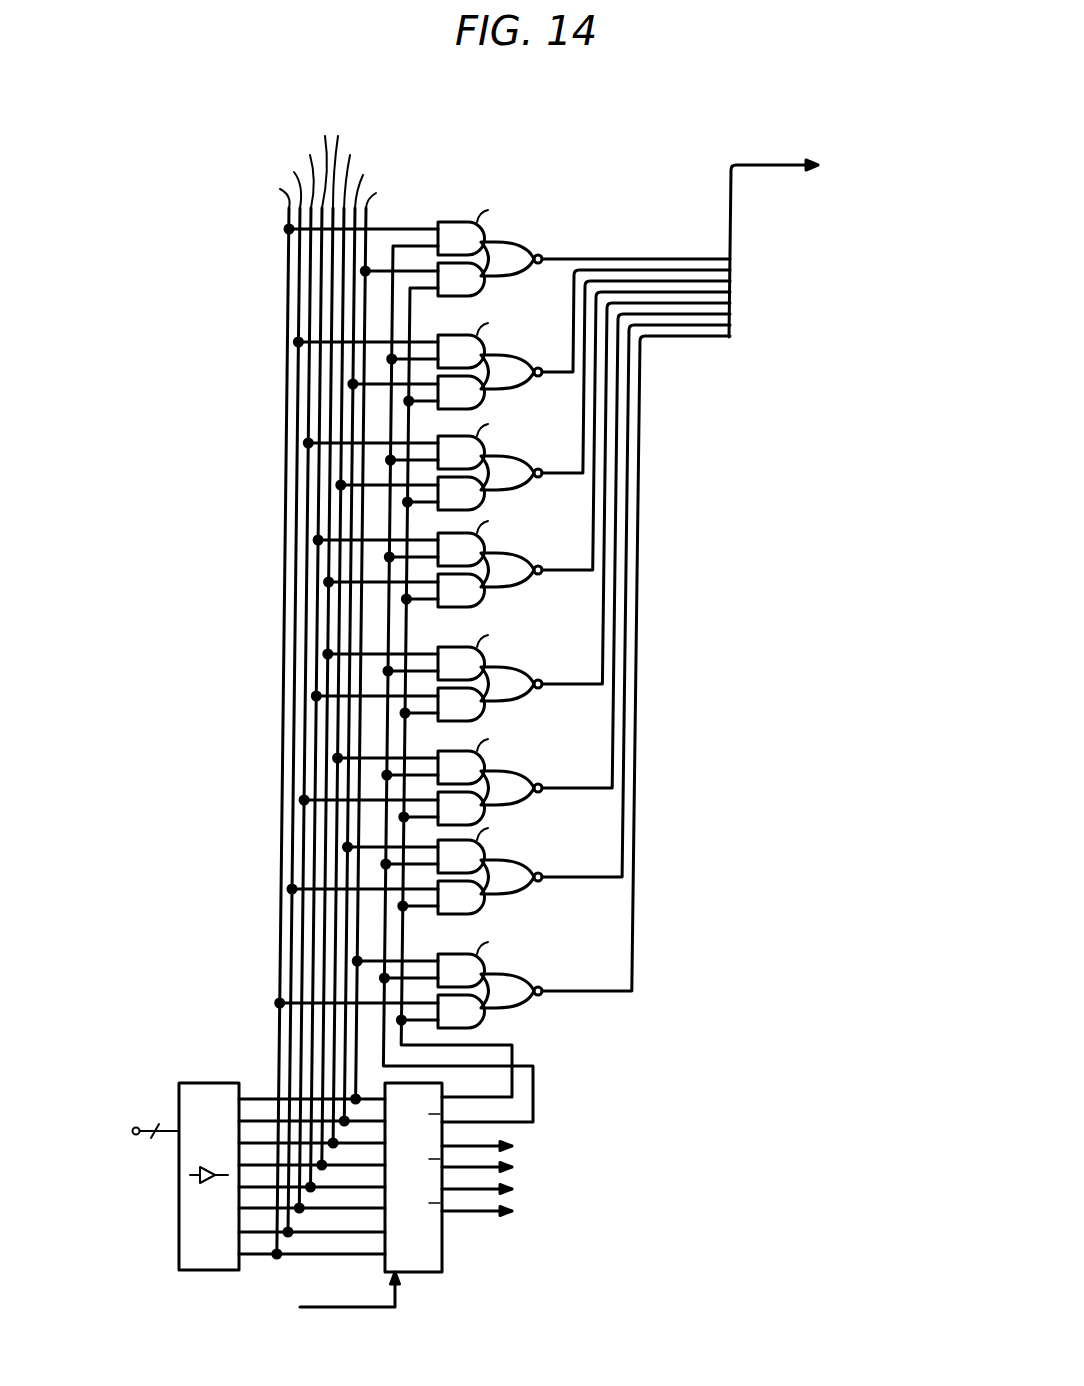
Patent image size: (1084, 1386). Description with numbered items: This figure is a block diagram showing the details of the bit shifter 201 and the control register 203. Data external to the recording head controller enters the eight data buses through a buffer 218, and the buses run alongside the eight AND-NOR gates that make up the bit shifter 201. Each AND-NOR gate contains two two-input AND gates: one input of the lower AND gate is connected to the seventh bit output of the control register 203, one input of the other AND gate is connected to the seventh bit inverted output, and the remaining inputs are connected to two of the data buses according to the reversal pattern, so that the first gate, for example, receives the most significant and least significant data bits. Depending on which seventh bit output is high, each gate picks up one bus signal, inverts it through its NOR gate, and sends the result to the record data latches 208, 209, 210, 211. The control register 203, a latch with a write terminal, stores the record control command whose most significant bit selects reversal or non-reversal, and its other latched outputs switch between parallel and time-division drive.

The bit shifter 201 is at (230, 587).
The control register 203 is at (442, 1238).
The buffer 218 is at (179, 1250).
The record data latch 208 is at (833, 246).
The record data latch 209 is at (833, 246).
The record data latch 210 is at (833, 246).
The record data latch 211 is at (833, 246).